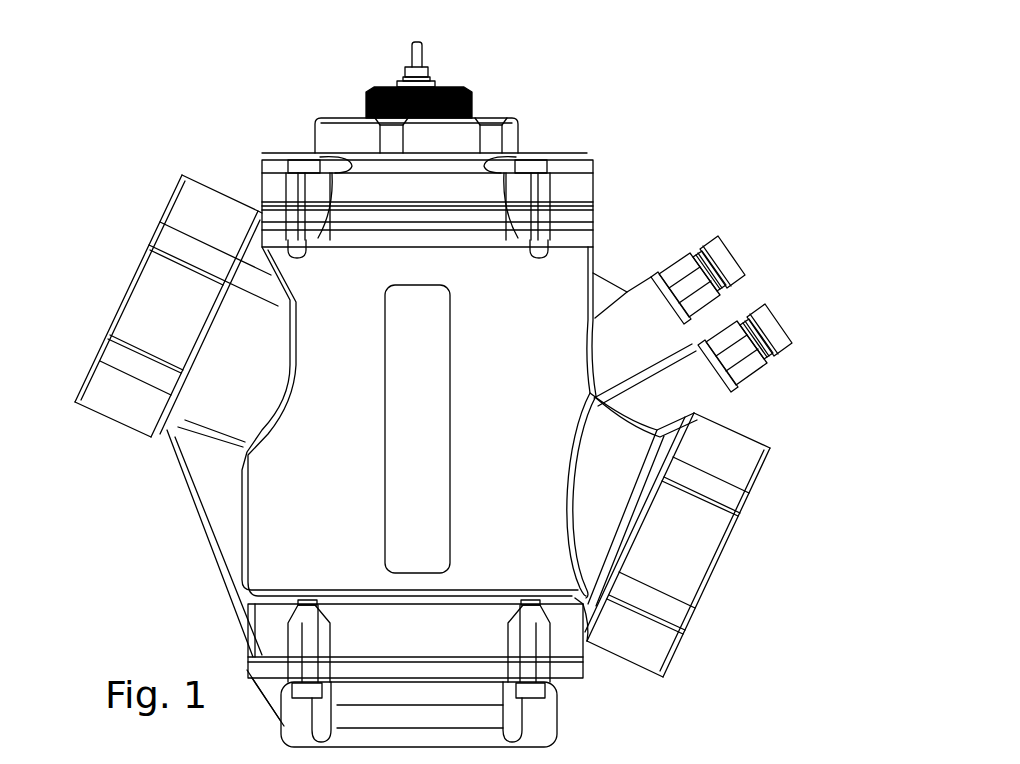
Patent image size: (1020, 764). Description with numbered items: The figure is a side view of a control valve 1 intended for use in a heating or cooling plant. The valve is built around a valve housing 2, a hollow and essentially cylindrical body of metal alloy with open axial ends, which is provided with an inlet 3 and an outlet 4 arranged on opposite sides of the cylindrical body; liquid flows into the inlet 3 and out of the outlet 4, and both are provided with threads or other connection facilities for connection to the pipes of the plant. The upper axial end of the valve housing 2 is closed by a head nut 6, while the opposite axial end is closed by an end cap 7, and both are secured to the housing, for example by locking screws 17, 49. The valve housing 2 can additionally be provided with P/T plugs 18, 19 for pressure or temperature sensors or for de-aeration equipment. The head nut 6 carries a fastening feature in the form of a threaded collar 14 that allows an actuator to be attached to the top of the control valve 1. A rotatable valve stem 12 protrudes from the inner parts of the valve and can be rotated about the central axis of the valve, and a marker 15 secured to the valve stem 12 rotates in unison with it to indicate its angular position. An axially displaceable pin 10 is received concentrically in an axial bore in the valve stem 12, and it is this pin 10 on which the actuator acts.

The control valve 1 is at (203, 106).
The valve housing 2 is at (272, 535).
The inlet 3 is at (133, 268).
The outlet 4 is at (717, 577).
The head nut 6 is at (562, 168).
The end cap 7 is at (547, 717).
The axially displaceable pin 10 is at (419, 52).
The rotatable valve stem 12 is at (403, 70).
The threaded collar 14 is at (470, 100).
The marker 15 is at (433, 85).
The locking screw 17 is at (303, 165).
The P/T plug 18 is at (678, 254).
The P/T plug 19 is at (723, 338).
The locking screw 49 is at (303, 690).